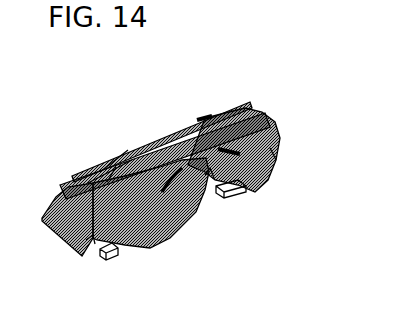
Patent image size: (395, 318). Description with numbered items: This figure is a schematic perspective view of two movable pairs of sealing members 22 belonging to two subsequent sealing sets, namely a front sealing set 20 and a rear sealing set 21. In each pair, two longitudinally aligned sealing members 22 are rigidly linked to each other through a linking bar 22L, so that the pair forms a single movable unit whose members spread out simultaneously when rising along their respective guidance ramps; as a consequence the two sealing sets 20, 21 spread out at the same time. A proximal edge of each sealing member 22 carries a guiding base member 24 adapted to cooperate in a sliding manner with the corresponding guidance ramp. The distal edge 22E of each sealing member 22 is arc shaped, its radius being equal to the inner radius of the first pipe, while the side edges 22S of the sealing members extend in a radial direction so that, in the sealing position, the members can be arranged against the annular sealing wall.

The front sealing set 20 is at (56, 250).
The rear sealing set 21 is at (260, 206).
The sealing member 22 is at (72, 208).
The linking bar 22L is at (165, 162).
The distal edge 22E is at (265, 126).
The side edge 22S is at (270, 148).
The connector block 24 is at (115, 253).